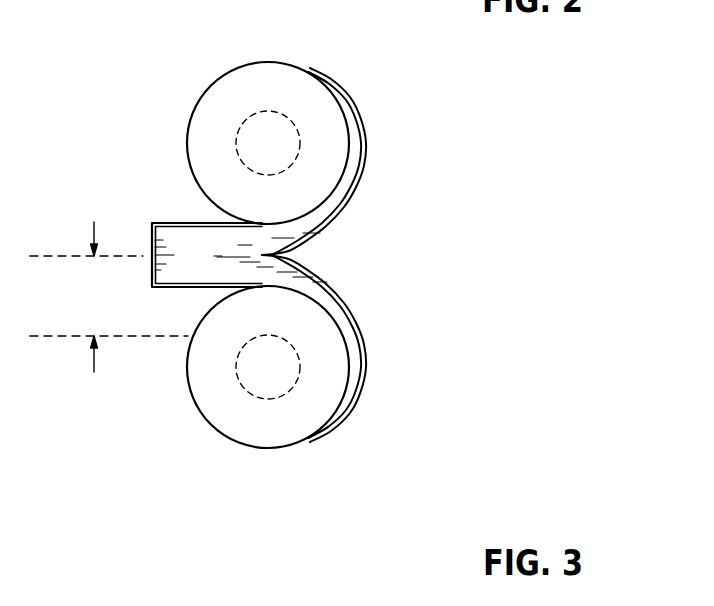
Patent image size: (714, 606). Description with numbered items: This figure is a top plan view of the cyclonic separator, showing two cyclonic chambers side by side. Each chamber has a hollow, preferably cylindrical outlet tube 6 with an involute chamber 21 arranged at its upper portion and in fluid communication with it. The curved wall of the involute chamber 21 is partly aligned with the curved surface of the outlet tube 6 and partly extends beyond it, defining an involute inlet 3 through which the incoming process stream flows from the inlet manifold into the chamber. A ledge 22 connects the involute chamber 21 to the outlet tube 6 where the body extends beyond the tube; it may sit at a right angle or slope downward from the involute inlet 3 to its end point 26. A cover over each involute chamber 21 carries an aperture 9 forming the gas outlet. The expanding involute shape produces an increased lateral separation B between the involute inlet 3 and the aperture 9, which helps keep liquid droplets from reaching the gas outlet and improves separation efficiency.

The involute inlet 3 is at (168, 223).
The outlet tube 6 is at (243, 67).
The aperture 9 is at (232, 147).
The involute chamber 21 is at (364, 190).
The ledge 22 is at (350, 146).
The end point 26 is at (307, 71).
The lateral separation B is at (109, 297).